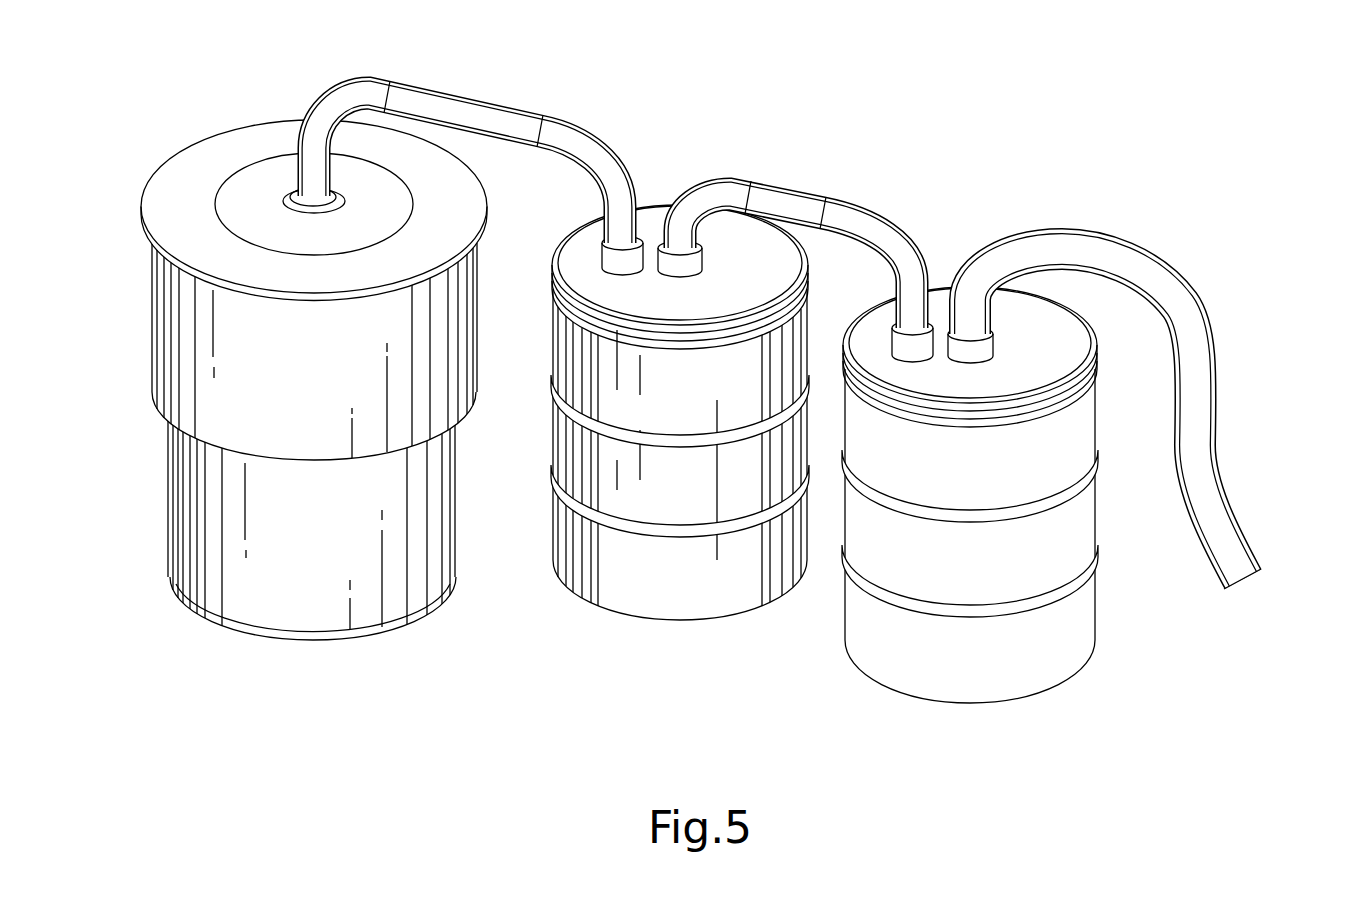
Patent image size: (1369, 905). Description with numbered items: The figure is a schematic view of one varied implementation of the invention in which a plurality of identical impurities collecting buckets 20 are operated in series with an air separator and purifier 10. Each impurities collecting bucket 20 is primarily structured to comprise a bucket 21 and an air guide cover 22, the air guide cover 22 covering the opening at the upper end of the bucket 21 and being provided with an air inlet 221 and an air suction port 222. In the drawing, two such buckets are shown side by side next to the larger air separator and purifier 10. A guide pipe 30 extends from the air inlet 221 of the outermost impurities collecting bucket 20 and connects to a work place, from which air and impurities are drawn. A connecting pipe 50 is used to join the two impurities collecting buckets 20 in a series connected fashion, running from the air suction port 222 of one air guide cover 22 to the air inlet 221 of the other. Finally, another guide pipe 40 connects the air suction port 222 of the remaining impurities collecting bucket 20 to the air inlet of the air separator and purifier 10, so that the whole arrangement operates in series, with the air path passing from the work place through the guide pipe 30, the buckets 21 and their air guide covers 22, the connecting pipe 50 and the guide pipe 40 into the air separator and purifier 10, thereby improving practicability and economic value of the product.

The air separator and purifier 10 is at (248, 642).
The impurities collecting bucket 20 is at (829, 394).
The bucket 21 is at (647, 490).
The air guide cover 22 is at (828, 412).
The air inlet 221 is at (685, 268).
The air suction port 222 is at (620, 263).
The guide pipe 30 is at (1245, 527).
The guide pipe 40 is at (577, 132).
The connecting pipe 50 is at (867, 202).